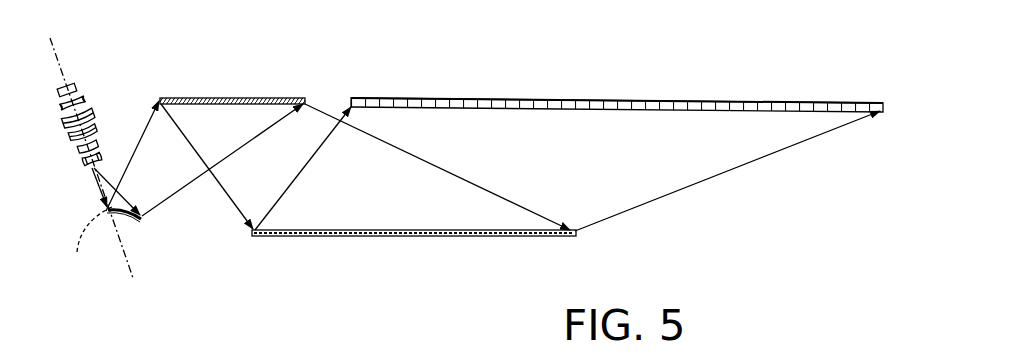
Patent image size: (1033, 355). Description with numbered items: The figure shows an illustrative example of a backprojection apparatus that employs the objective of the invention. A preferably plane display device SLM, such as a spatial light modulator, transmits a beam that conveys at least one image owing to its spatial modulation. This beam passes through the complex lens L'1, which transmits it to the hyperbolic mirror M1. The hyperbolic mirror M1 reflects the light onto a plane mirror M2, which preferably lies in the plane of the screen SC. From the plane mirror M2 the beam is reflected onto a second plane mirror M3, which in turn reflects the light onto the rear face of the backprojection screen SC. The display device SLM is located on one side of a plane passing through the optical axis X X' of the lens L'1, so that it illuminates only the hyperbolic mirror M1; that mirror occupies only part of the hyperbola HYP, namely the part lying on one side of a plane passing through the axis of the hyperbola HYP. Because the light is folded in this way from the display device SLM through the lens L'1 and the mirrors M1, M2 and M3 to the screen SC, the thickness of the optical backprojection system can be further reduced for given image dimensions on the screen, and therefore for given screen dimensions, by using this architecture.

The optical axis X is at (67, 87).
The optical axis X' is at (121, 228).
The display device SLM is at (92, 69).
The lens L'1 is at (57, 135).
The hyperbolic mirror M1 is at (129, 226).
The hyperbola HYP is at (81, 238).
The plane mirror M2 is at (232, 88).
The second plane mirror M3 is at (414, 248).
The backprojection screen SC is at (617, 91).